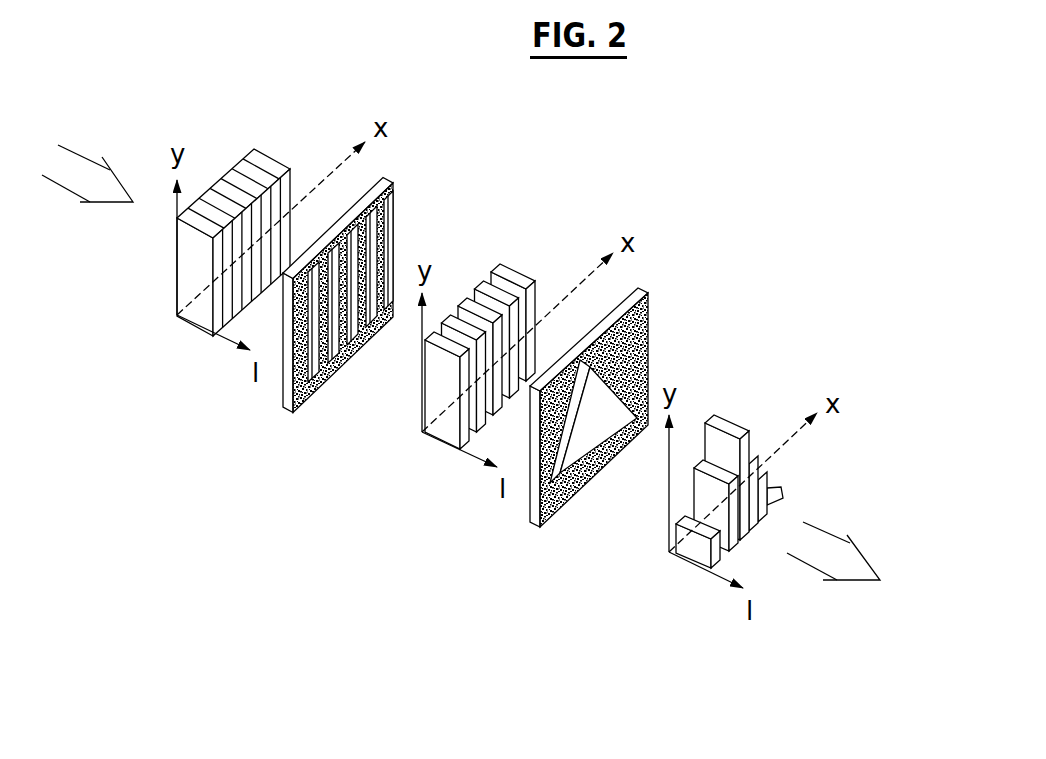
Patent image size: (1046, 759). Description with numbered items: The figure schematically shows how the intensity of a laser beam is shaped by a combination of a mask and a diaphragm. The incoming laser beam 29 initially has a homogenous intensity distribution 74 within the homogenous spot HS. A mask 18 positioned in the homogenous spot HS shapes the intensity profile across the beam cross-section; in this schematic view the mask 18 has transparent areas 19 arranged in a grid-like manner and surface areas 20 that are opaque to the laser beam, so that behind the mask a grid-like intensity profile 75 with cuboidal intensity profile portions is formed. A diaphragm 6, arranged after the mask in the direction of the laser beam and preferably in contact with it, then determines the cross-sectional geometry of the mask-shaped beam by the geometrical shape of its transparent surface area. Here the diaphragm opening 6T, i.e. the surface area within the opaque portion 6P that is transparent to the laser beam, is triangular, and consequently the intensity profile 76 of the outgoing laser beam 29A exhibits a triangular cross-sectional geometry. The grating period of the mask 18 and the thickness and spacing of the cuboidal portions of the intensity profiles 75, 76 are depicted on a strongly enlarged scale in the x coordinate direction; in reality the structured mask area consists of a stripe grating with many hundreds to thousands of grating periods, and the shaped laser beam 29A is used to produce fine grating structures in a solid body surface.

The laser beam 29 is at (83, 175).
The homogenous intensity distribution 74 is at (230, 153).
The mask 18 is at (376, 308).
The transparent areas 19 is at (345, 338).
The surface areas opaque to the laser beam 20 is at (338, 357).
The homogenous spot HS is at (280, 411).
The grid-like intensity profile 75 is at (523, 255).
The diaphragm 6 is at (617, 439).
The opaque portion 6P is at (580, 454).
The diaphragm opening 6T is at (593, 471).
The intensity profile 76 is at (780, 390).
The laser beam 29A is at (822, 549).